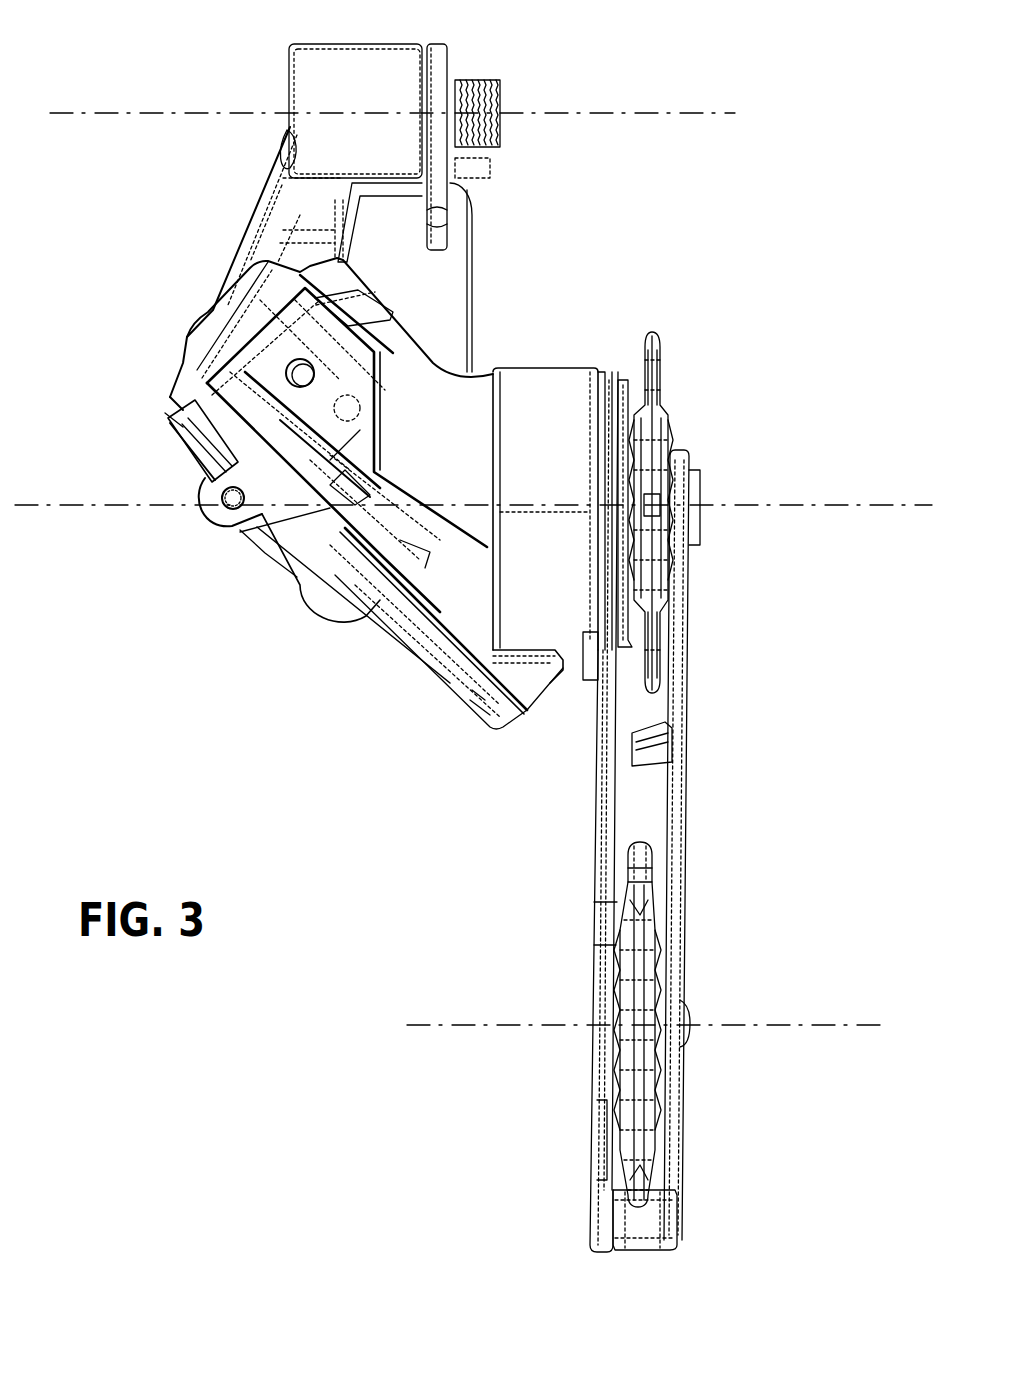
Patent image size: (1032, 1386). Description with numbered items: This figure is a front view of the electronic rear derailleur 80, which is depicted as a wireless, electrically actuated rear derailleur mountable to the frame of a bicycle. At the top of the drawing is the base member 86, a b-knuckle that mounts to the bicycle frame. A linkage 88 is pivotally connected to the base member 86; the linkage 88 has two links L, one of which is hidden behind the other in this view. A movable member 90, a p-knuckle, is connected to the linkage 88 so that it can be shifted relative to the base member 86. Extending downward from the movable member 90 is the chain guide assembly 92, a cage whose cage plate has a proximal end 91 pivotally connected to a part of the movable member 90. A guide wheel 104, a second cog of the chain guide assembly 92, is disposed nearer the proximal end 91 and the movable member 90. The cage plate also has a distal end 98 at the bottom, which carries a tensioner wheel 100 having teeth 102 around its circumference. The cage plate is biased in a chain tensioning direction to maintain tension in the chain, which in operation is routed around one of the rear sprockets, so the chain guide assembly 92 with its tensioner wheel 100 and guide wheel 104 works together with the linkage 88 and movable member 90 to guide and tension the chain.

The rear derailleur 80 is at (775, 393).
The base member 86 is at (375, 72).
The linkage 88 is at (298, 633).
The movable member 90 is at (535, 397).
The proximal end 91 is at (668, 438).
The chain guide assembly 92 is at (725, 772).
The distal end 98 is at (680, 1240).
The tensioner wheel 100 is at (643, 896).
The teeth 102 is at (643, 843).
The guide wheel 104 is at (662, 383).
The links L is at (178, 411).